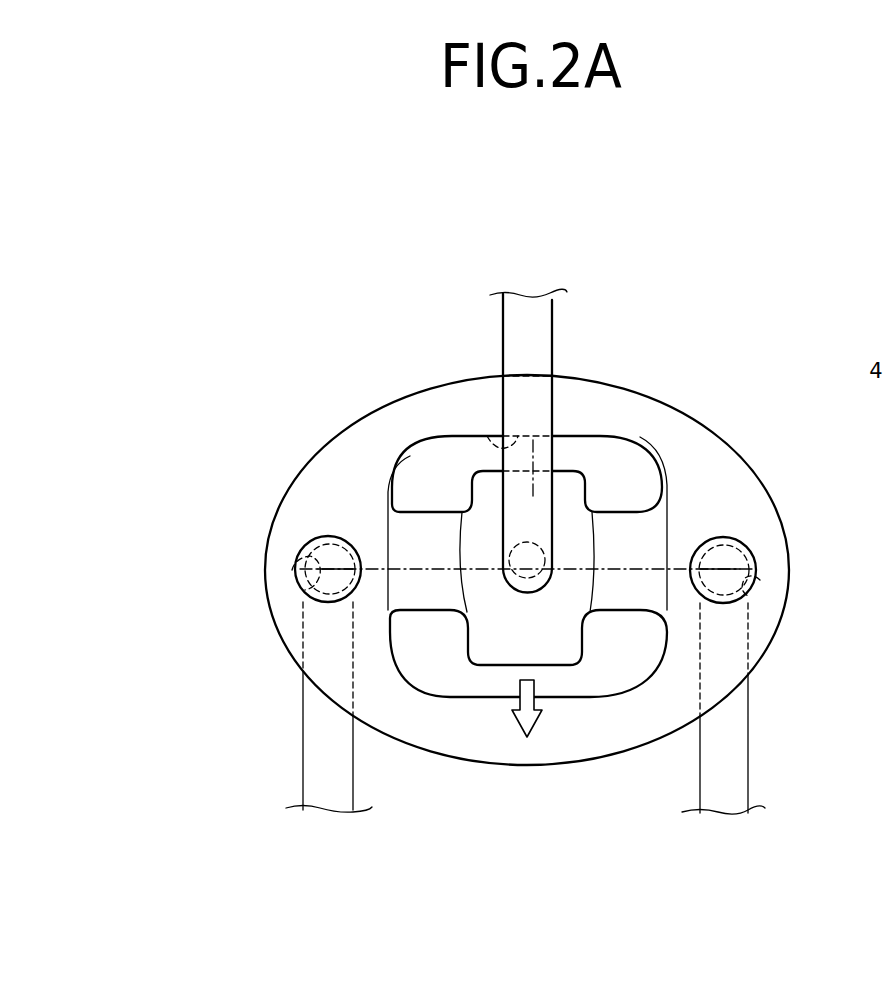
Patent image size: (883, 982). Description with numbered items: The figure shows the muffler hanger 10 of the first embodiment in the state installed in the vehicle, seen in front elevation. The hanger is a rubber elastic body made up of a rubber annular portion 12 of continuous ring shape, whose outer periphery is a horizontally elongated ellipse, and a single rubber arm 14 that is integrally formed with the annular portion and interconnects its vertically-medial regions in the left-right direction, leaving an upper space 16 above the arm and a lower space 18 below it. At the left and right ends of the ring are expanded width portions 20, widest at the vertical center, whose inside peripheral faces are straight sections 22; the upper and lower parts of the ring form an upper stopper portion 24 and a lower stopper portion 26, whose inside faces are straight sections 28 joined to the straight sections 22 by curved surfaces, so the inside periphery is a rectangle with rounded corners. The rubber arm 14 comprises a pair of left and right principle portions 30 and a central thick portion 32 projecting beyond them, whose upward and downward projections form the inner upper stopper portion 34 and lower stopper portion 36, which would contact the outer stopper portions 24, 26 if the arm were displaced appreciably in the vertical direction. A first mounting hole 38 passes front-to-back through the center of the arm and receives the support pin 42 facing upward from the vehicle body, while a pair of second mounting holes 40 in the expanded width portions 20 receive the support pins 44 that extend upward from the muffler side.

The muffler hanger 10 is at (543, 517).
The rubber annular portion 12 is at (693, 460).
The rubber arm 14 is at (616, 512).
The upper space 16 is at (432, 462).
The lower space 18 is at (450, 697).
The expanded width portions 20 is at (282, 534).
The straight sections 22 is at (390, 612).
The upper stopper portion 24 is at (497, 437).
The lower stopper portion 26 is at (529, 752).
The straight sections 28 is at (500, 697).
The principle portions 30 is at (410, 585).
The thick portion 32 is at (468, 528).
The upper stopper portion 34 is at (533, 480).
The lower stopper portion 36 is at (563, 655).
The first mounting hole 38 is at (545, 540).
The second mounting holes 40 is at (292, 570).
The support pin 42 is at (548, 308).
The support pins 44 is at (306, 746).